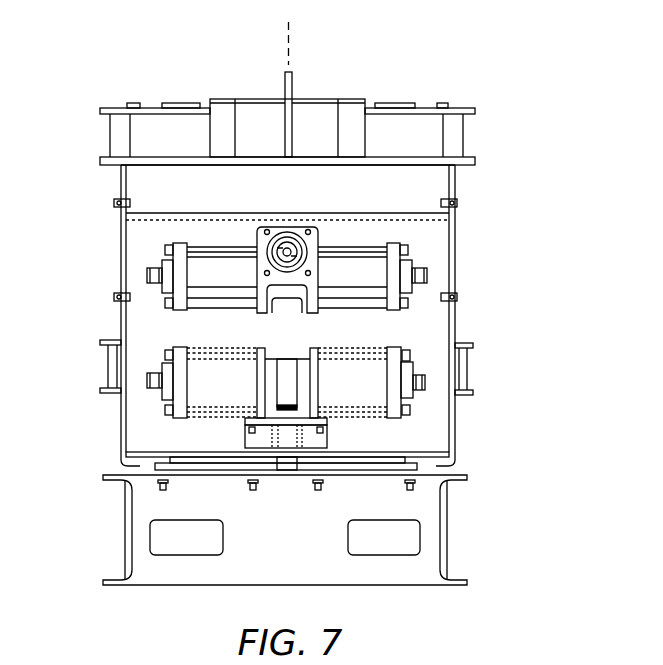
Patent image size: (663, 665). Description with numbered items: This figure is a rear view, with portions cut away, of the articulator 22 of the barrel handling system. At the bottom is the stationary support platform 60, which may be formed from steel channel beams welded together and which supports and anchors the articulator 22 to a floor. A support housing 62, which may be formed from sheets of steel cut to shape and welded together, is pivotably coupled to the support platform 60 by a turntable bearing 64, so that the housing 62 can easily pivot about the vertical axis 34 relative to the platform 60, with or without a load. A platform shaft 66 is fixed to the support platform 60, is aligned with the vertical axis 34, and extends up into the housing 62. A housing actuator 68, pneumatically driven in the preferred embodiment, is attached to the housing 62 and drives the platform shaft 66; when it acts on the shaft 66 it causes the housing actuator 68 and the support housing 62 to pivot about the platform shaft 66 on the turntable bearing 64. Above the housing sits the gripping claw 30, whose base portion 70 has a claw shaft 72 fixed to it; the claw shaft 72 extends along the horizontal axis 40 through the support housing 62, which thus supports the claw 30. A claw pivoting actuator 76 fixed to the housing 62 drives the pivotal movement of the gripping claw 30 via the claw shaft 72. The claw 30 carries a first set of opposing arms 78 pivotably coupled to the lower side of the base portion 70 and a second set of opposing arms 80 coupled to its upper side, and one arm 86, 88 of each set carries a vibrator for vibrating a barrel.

The articulator 22 is at (594, 106).
The gripping claw 30 is at (421, 100).
The vertical axis 34 is at (287, 50).
The horizontal axis 40 is at (291, 250).
The stationary support platform 60 is at (430, 542).
The support housing 62 is at (456, 330).
The turntable bearing 64 is at (372, 462).
The platform shaft 66 is at (284, 360).
The housing actuator 68 is at (405, 375).
The base portion 70 is at (319, 100).
The claw shaft 72 is at (284, 246).
The claw pivoting actuator 76 is at (412, 263).
The first set of opposing arms 78 is at (101, 363).
The second set of opposing arms 80 is at (478, 139).
The arm 86 is at (112, 341).
The arm 88 is at (150, 108).